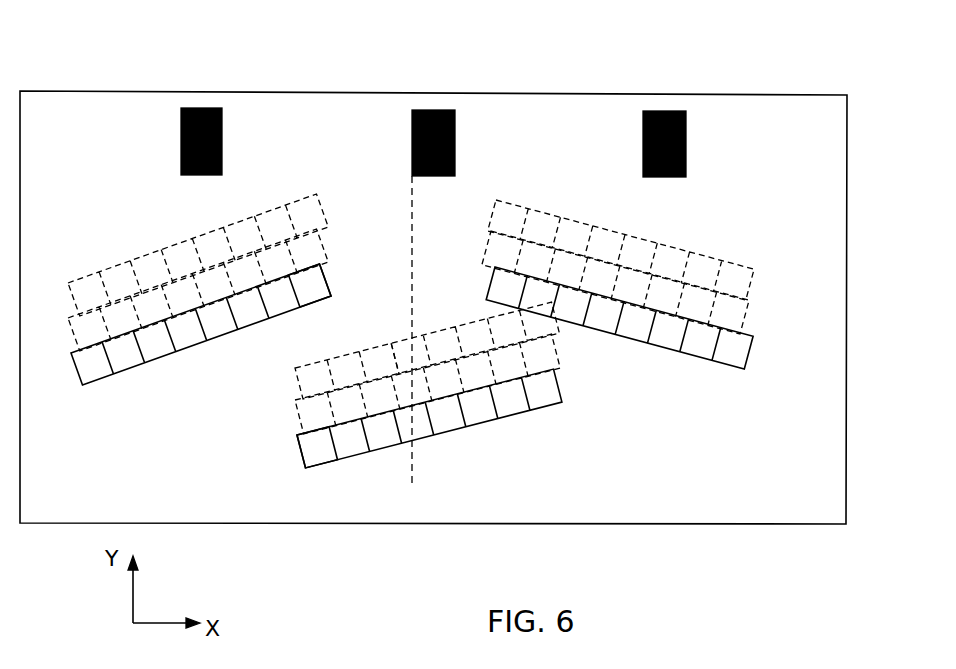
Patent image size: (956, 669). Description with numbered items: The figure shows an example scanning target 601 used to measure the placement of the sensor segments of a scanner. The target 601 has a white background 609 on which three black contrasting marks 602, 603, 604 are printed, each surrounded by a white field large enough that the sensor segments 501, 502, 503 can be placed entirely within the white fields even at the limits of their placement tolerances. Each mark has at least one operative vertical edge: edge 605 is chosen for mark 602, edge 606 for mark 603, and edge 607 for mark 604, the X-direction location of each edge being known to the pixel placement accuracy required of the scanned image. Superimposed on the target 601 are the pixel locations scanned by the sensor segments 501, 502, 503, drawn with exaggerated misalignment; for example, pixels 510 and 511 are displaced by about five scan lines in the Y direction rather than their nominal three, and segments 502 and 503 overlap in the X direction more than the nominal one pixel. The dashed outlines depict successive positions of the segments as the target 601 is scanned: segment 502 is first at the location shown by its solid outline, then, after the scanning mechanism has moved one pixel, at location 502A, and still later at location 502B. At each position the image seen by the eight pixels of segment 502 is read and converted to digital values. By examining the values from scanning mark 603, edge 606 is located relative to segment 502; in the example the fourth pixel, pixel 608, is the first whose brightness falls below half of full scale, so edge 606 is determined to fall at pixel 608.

The sensor segment 501 is at (226, 299).
The sensor segment 502 is at (388, 394).
The location of segment 502 502A is at (300, 418).
The location of segment 502 502B is at (298, 380).
The sensor segment 503 is at (743, 362).
The pixel 510 is at (313, 289).
The pixel 511 is at (320, 453).
The scanning target 601 is at (700, 525).
The contrasting mark 602 is at (197, 108).
The contrasting mark 603 is at (429, 110).
The contrasting mark 604 is at (661, 111).
The operative vertical edge 605 is at (181, 128).
The operative vertical edge 606 is at (412, 127).
The operative vertical edge 607 is at (643, 127).
The pixel 608 is at (400, 345).
The white background 609 is at (743, 145).